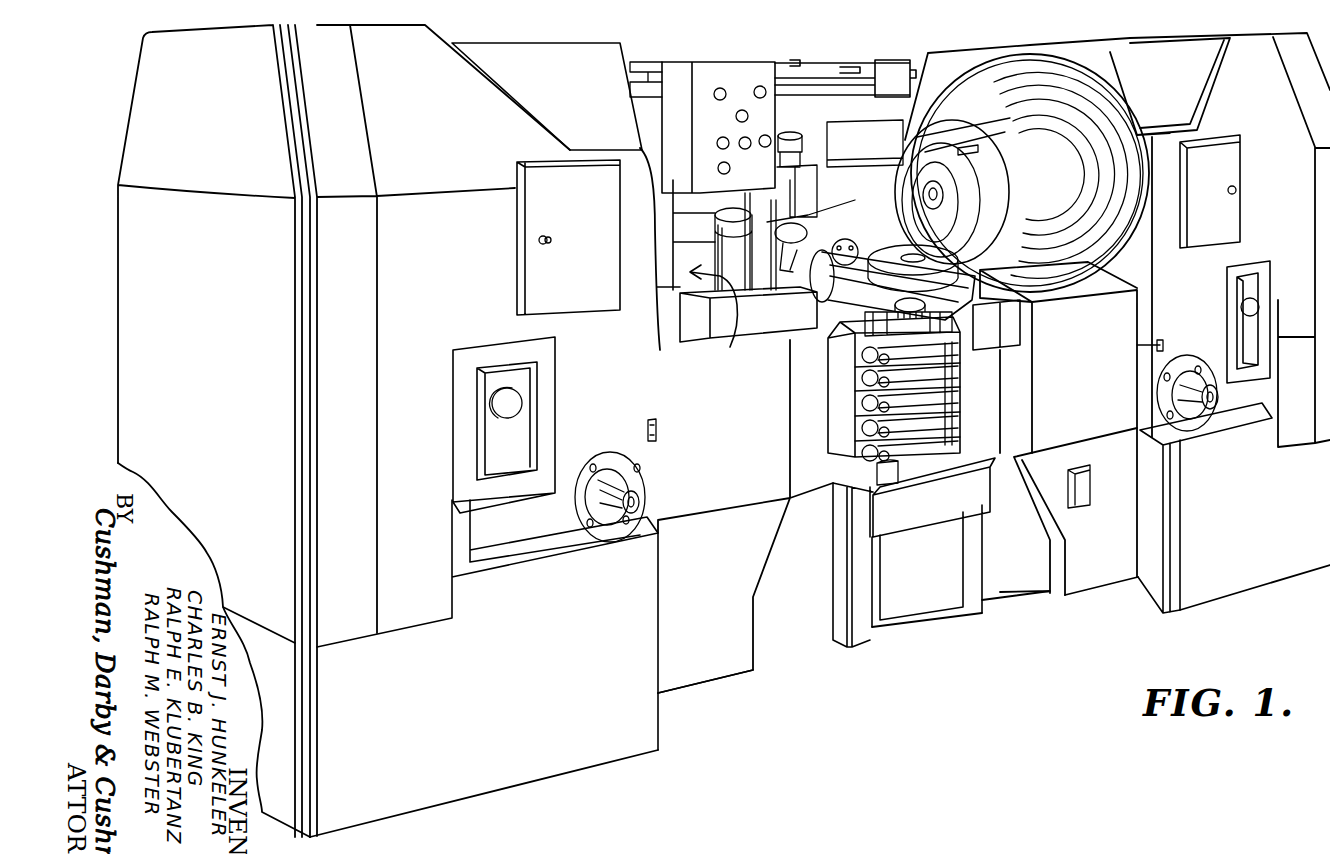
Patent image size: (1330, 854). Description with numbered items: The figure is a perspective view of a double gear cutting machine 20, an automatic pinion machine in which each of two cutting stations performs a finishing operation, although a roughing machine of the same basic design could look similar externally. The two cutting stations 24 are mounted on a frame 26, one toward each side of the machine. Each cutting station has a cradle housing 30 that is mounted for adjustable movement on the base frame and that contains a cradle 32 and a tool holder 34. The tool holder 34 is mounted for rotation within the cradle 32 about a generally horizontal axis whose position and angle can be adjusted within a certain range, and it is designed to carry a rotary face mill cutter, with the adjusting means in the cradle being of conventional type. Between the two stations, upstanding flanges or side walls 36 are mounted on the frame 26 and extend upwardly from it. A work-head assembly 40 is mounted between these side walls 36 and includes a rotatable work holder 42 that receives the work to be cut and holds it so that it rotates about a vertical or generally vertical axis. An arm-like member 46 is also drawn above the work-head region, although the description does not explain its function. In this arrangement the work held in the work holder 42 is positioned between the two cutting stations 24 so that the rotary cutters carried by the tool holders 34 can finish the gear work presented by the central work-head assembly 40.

The double gear cutting machine 20 is at (826, 700).
The cutting station 24 is at (726, 300).
The frame 26 is at (773, 635).
The cradle housing 30 is at (460, 315).
The cradle 32 is at (683, 222).
The tool holder 34 is at (955, 210).
The side walls 36 is at (737, 430).
The work-head assembly 40 is at (851, 312).
The rotatable work holder 42 is at (905, 250).
The arm 46 is at (845, 85).